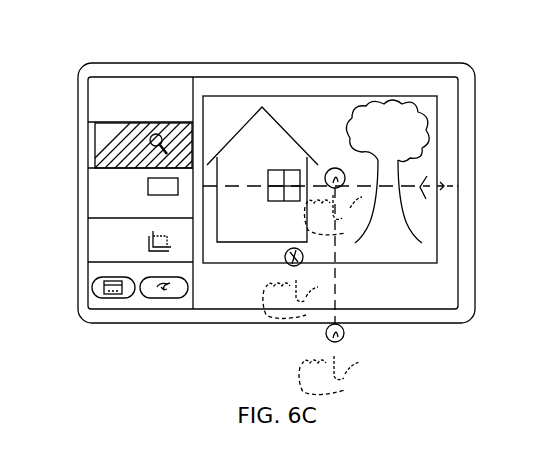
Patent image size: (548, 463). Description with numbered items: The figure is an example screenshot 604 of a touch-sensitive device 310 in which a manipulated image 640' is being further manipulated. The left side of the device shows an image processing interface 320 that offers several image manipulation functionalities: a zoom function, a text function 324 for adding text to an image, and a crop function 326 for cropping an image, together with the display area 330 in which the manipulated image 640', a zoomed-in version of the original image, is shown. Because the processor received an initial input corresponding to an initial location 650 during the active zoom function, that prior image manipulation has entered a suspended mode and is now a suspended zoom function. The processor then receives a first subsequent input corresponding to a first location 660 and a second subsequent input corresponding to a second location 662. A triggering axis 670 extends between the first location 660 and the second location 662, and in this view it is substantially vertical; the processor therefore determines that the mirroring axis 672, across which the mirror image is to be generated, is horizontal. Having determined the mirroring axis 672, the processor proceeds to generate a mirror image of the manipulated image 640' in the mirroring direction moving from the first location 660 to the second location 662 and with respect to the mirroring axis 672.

The screenshot 604 is at (408, 31).
The touch-sensitive device 310 is at (158, 64).
The image processing interface 320 is at (110, 76).
The text function 324 is at (96, 197).
The crop function 326 is at (96, 240).
The display area 330 is at (443, 99).
The manipulated image 640' is at (262, 133).
The mirroring axis 672 is at (444, 186).
The triggering axis 670 is at (338, 292).
The second location 662 is at (332, 168).
The initial location 650 is at (288, 258).
The first location 660 is at (344, 337).